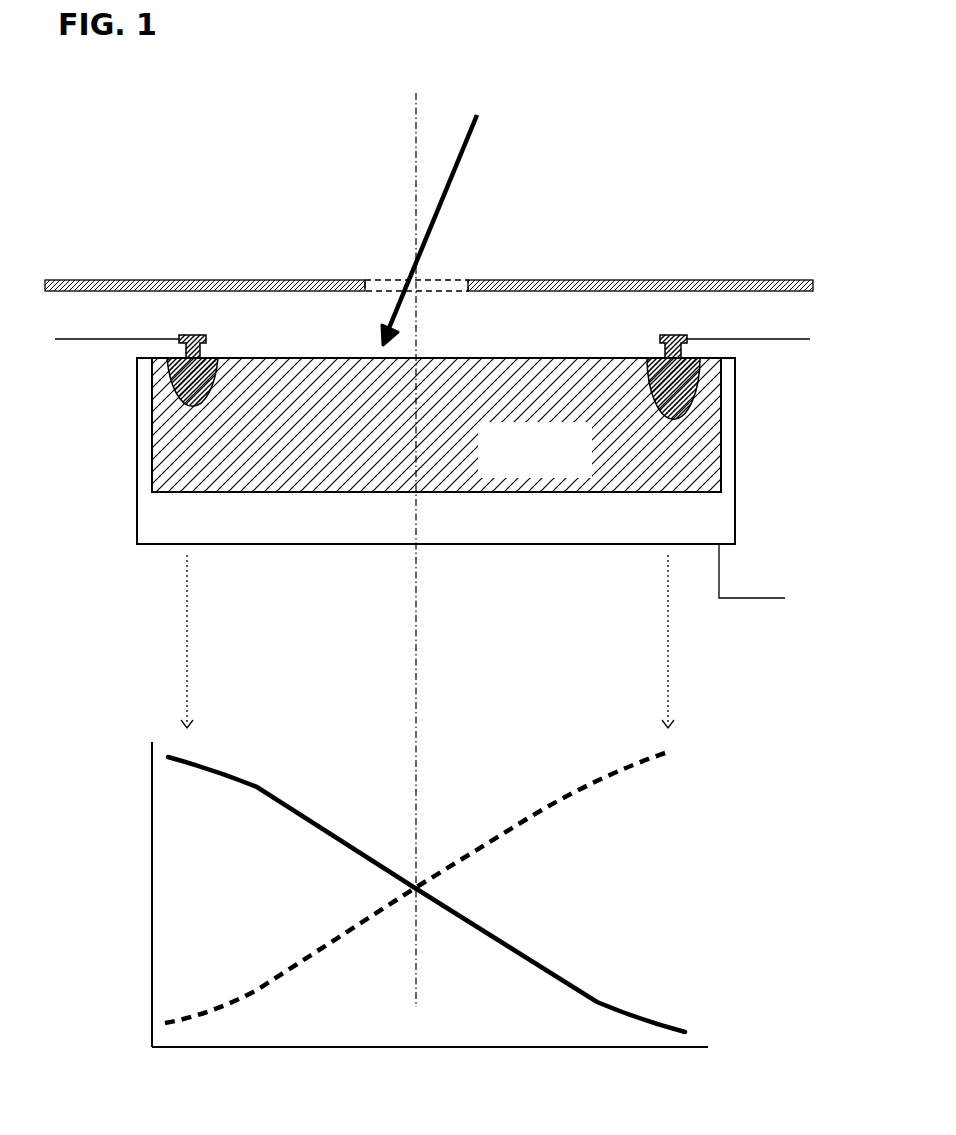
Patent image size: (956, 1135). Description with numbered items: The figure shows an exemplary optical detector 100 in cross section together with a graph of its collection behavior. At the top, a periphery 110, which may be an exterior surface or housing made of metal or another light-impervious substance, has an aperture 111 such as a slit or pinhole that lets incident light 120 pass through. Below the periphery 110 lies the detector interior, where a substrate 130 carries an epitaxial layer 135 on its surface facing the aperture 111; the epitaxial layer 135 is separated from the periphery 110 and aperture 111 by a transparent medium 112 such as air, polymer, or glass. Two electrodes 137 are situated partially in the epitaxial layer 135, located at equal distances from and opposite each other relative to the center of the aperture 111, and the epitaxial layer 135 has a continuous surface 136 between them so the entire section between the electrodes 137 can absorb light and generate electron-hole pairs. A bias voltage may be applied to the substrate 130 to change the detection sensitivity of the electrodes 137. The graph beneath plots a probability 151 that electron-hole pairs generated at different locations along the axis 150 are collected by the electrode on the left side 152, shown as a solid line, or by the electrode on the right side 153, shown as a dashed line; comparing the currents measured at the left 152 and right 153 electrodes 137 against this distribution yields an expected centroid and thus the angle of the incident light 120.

The optical detector 100 is at (435, 527).
The periphery 110 is at (80, 280).
The aperture 111 is at (430, 288).
The transparent medium 112 is at (628, 325).
The incident light 120 is at (461, 201).
The substrate 130 is at (436, 451).
The epitaxial layer 135 is at (436, 425).
The continuous surface 136 is at (338, 355).
The electrodes 137 is at (167, 393).
The axis 150 is at (430, 1080).
The probability 151 is at (92, 894).
The left side electrode plot 152 is at (426, 894).
The right side electrode plot 153 is at (425, 887).